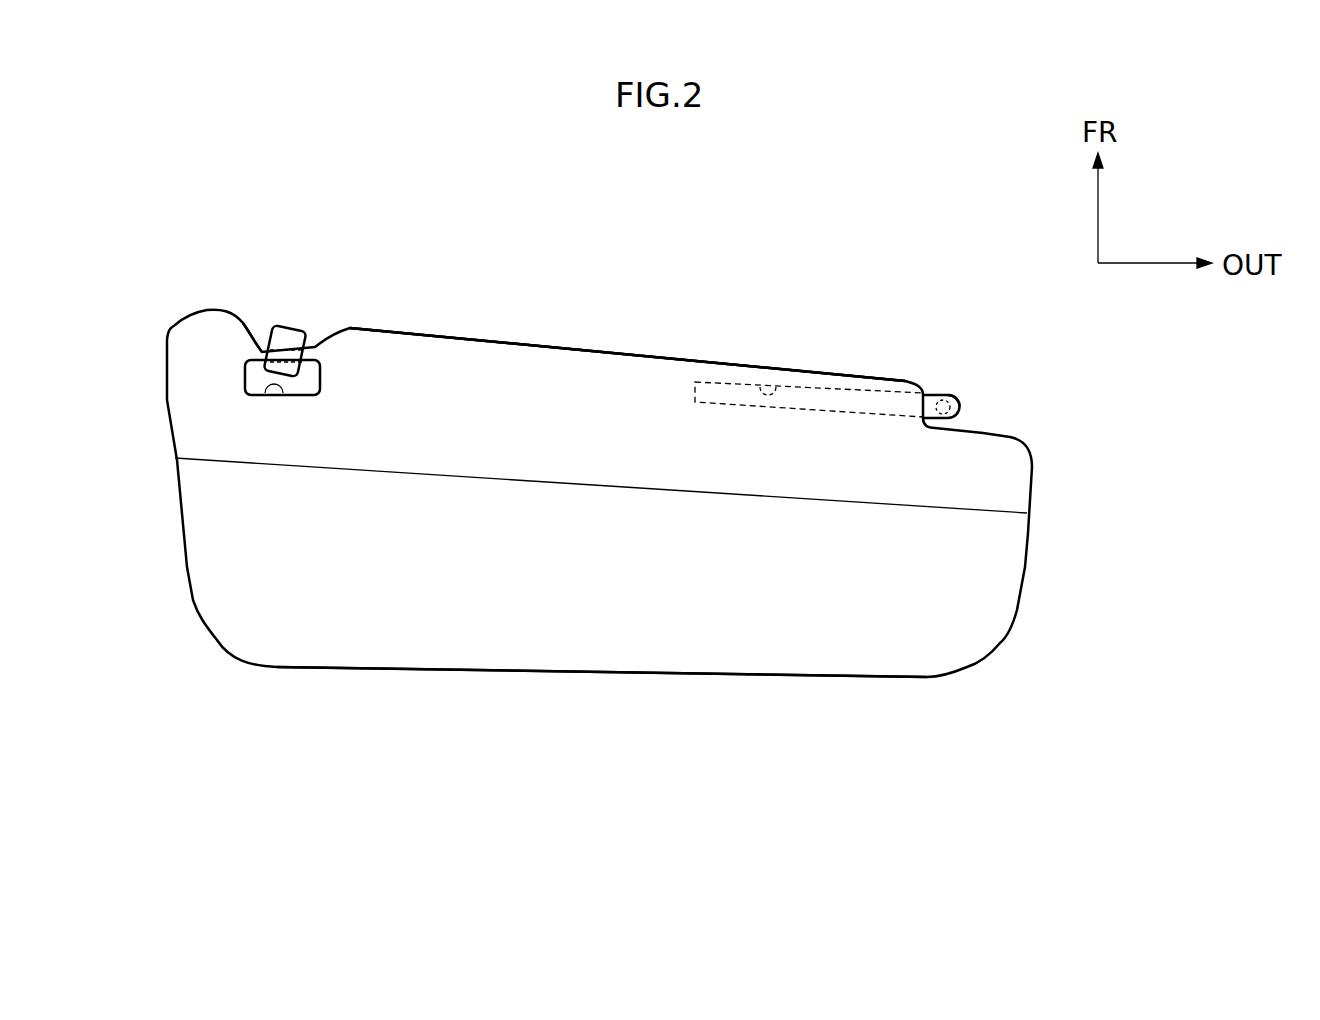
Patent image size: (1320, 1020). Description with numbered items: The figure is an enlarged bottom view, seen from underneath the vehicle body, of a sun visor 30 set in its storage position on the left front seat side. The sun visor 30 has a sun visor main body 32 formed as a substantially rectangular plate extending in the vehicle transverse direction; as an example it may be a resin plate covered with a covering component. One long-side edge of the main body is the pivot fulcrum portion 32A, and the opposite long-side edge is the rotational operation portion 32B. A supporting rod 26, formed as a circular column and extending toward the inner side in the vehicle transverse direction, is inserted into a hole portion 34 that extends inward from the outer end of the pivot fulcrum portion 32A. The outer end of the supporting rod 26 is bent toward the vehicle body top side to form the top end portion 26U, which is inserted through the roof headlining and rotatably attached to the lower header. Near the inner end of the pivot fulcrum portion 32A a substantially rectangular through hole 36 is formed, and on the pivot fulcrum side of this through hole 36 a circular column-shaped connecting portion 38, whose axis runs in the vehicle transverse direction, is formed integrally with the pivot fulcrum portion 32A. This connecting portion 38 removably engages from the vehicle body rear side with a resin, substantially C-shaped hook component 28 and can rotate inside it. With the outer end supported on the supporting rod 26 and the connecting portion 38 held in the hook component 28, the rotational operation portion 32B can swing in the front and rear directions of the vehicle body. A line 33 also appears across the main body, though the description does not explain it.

The supporting rod 26 is at (934, 393).
The top end portion 26U is at (960, 402).
The hook component 28 is at (290, 335).
The sun visor 30 is at (568, 347).
The sun visor main body 32 is at (527, 638).
The pivot fulcrum portion 32A is at (463, 335).
The rotational operation portion 32B is at (707, 677).
The fold line 33 is at (390, 472).
The hole portion 34 is at (777, 380).
The through hole 36 is at (283, 393).
The connecting portion 38 is at (262, 352).